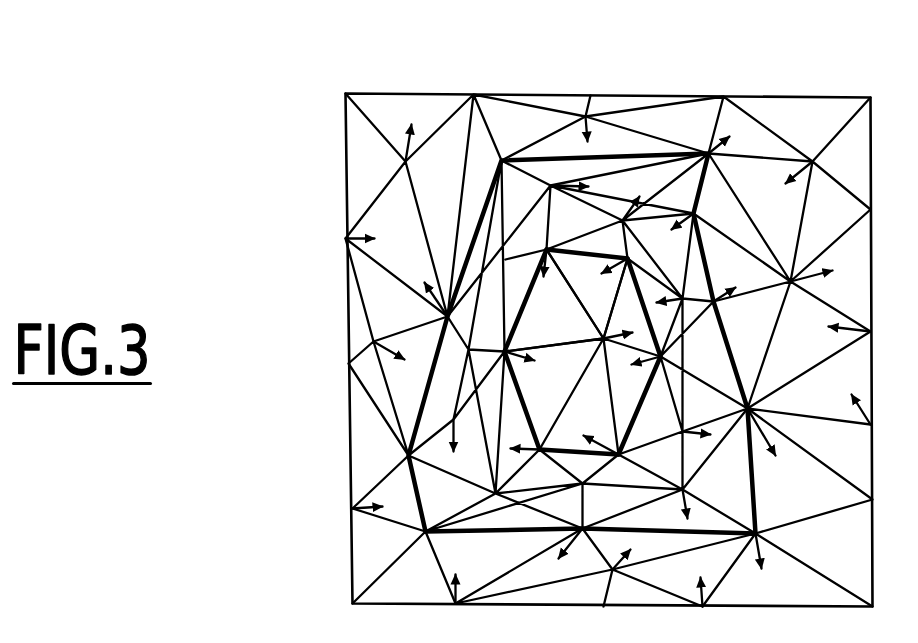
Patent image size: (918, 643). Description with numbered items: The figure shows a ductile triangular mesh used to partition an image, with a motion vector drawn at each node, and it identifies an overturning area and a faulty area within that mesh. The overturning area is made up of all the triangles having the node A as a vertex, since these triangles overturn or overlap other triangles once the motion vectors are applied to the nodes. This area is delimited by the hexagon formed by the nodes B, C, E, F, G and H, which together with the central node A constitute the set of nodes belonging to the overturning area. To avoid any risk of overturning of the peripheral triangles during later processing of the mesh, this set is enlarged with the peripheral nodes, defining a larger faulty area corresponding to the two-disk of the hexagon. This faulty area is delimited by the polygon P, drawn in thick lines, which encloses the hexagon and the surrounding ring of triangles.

The polygon P is at (625, 157).
The node A is at (601, 337).
The node B is at (506, 349).
The node C is at (543, 248).
The node E is at (625, 255).
The node F is at (657, 357).
The node G is at (582, 467).
The node H is at (524, 418).